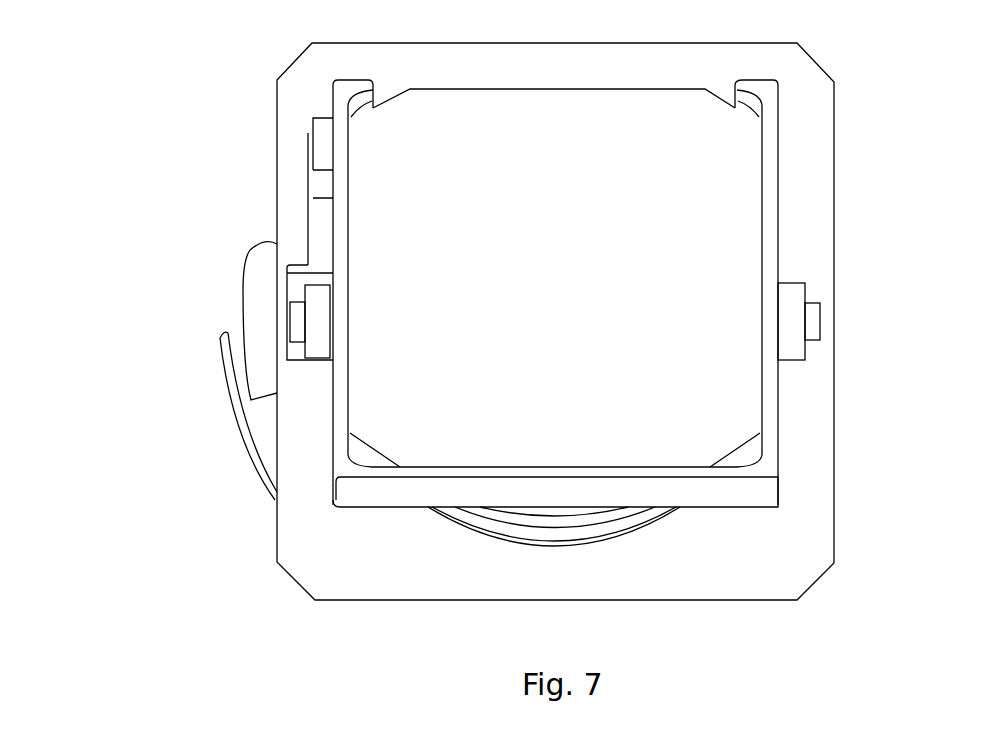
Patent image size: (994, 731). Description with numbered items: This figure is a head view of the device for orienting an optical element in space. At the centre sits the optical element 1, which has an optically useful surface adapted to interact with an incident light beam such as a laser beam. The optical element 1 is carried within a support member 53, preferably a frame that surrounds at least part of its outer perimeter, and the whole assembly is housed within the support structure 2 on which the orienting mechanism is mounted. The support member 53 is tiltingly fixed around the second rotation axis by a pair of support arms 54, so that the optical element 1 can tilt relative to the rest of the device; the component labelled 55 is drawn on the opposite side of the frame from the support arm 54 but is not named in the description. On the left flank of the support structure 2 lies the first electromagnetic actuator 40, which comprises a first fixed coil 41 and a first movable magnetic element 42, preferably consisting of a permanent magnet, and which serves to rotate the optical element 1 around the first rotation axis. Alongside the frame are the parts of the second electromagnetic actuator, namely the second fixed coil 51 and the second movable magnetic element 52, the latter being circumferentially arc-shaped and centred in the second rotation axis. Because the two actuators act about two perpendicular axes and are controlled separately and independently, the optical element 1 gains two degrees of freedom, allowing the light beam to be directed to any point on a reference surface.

The optical element 1 is at (733, 409).
The support structure 2 is at (737, 43).
The first electromagnetic actuator 40 is at (153, 367).
The first fixed coil 41 is at (240, 423).
The first movable magnetic element 42 is at (255, 294).
The second fixed coil 51 is at (320, 223).
The second movable magnetic element 52 is at (320, 143).
The support member 53 is at (778, 229).
The support arms 54 is at (318, 348).
The right connector block 55 is at (798, 321).